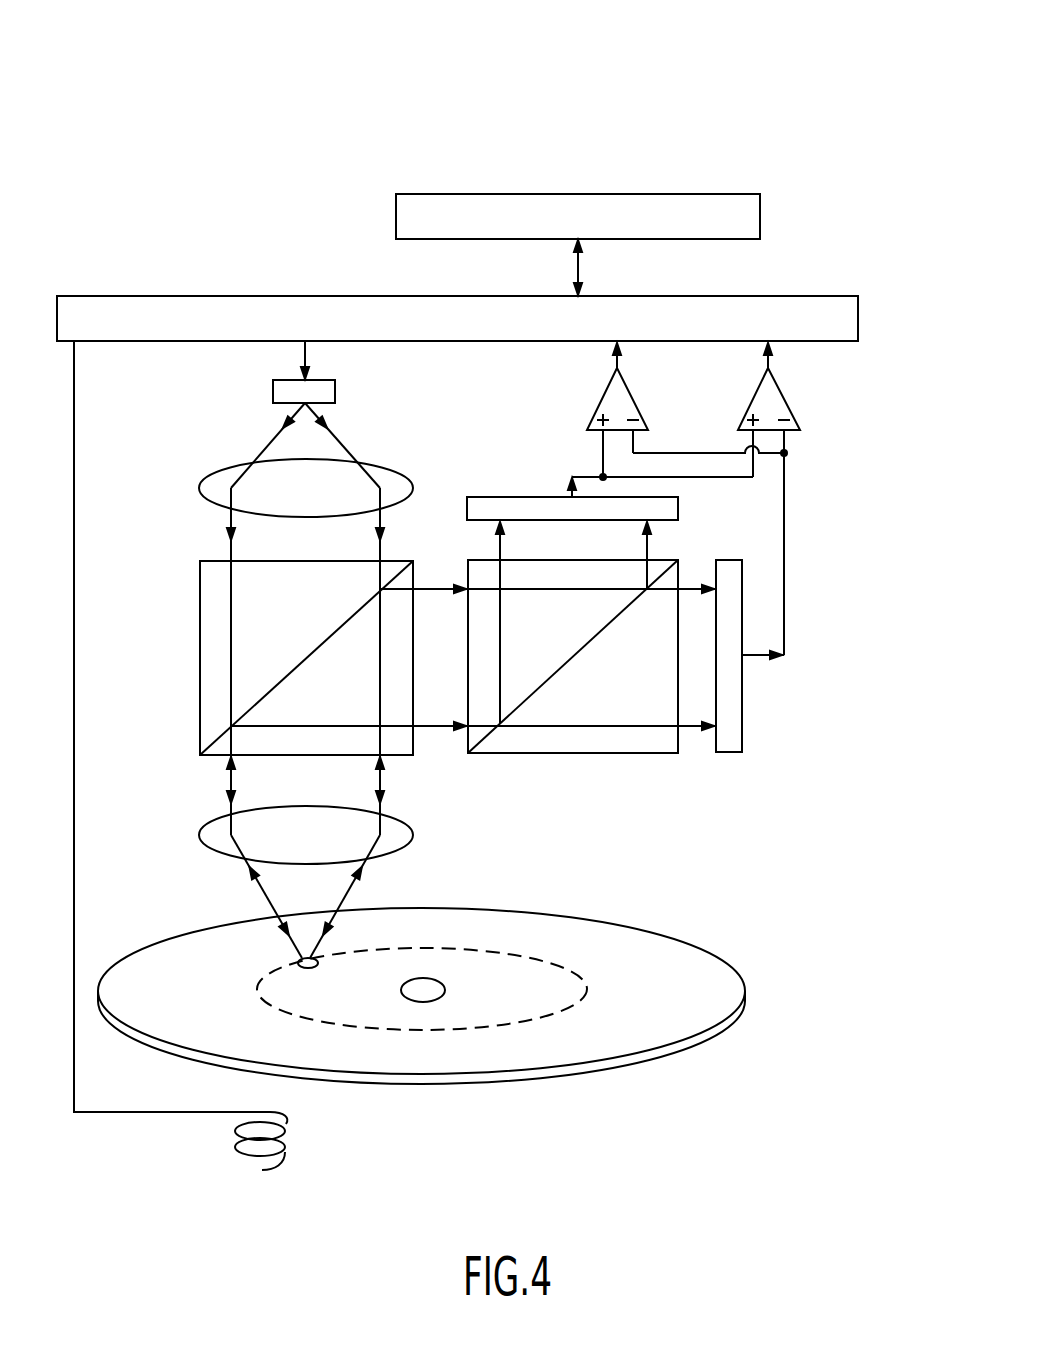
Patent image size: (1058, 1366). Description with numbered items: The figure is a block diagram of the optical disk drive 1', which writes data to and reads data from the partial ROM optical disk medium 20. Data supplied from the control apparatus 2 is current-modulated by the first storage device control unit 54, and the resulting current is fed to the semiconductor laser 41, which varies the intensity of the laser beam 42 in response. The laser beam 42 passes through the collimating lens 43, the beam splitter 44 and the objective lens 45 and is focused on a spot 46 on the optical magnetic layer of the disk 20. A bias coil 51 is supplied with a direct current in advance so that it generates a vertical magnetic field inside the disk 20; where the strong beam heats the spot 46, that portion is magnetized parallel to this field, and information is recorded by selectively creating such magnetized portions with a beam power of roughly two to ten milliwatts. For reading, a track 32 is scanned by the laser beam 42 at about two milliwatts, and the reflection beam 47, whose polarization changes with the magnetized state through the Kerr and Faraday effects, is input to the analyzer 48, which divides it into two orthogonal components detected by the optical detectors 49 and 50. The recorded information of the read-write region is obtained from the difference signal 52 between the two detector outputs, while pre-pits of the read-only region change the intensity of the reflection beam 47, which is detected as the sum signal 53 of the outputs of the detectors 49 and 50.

The optical disk drive 1' is at (592, 59).
The control apparatus 2 is at (677, 194).
The first storage device control unit 54 is at (787, 296).
The semiconductor laser 41 is at (273, 395).
The laser beam 42 is at (268, 443).
The collimating lens 43 is at (200, 488).
The beam splitter 44 is at (200, 658).
The objective lens 45 is at (200, 835).
The spot 46 is at (298, 964).
The reflection beam 47 is at (433, 730).
The analyzer 48 is at (588, 753).
The optical detector 49 is at (730, 752).
The optical detector 50 is at (532, 497).
The bias coil 51 is at (290, 1118).
The difference signal 52 is at (617, 364).
The sum signal 53 is at (768, 364).
The partial ROM optical disk medium 20 is at (668, 938).
The track 32 is at (548, 962).